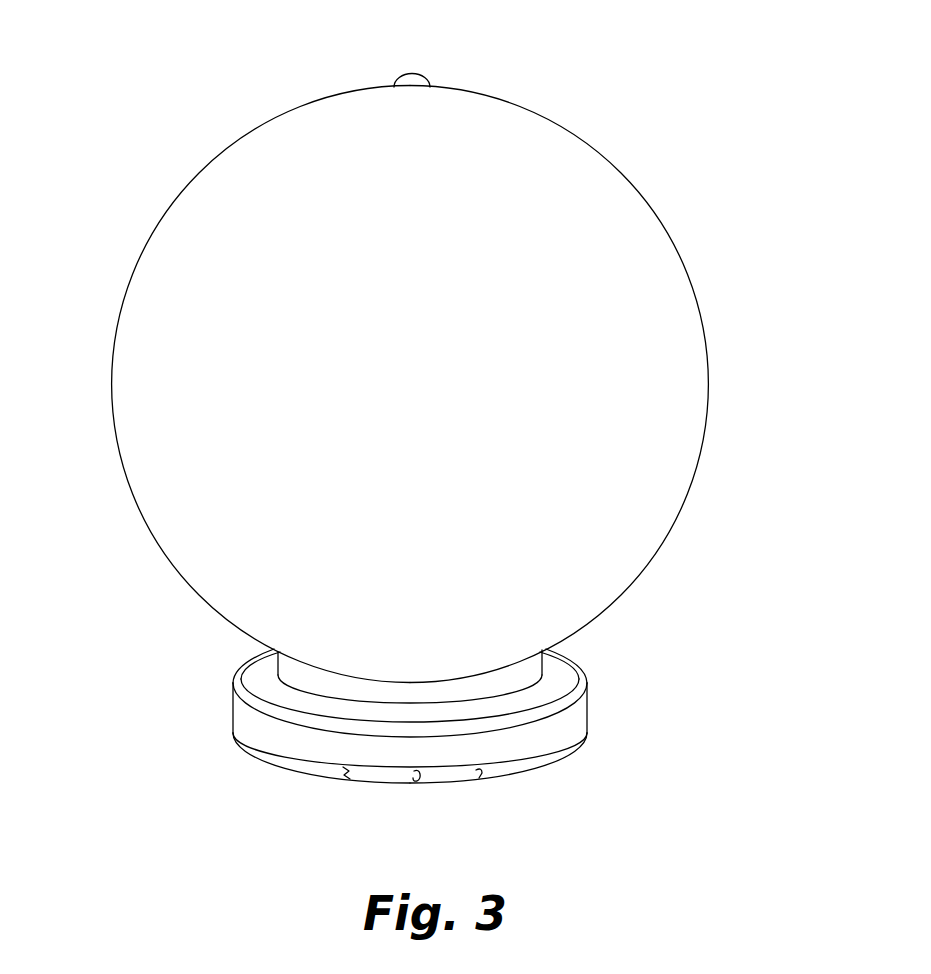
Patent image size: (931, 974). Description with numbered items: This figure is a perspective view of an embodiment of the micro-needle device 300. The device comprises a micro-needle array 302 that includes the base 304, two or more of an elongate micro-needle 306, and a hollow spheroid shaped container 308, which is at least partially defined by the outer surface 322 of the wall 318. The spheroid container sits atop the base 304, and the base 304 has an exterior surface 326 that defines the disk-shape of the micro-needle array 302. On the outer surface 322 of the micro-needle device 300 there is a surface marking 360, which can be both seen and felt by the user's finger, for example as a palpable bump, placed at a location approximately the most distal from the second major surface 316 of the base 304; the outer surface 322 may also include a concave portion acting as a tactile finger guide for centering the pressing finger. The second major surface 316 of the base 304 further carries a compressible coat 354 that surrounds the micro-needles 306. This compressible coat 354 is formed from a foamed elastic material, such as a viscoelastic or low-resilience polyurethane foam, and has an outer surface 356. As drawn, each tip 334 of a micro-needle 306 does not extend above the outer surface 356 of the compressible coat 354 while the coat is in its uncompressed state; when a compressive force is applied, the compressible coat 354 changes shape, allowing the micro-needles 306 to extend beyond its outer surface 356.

The micro-needle device 300 is at (695, 66).
The micro-needle array 302 is at (200, 658).
The base 304 is at (242, 717).
The elongate micro-needle 306 is at (343, 787).
The hollow spheroid shaped container 308 is at (640, 177).
The second major surface 316 is at (518, 760).
The wall 318 is at (670, 507).
The outer surface 322 is at (125, 428).
The exterior surface 326 is at (588, 708).
The tip 334 is at (478, 779).
The compressible coat 354 is at (383, 777).
The outer surface 356 is at (578, 757).
The surface marking 360 is at (412, 82).